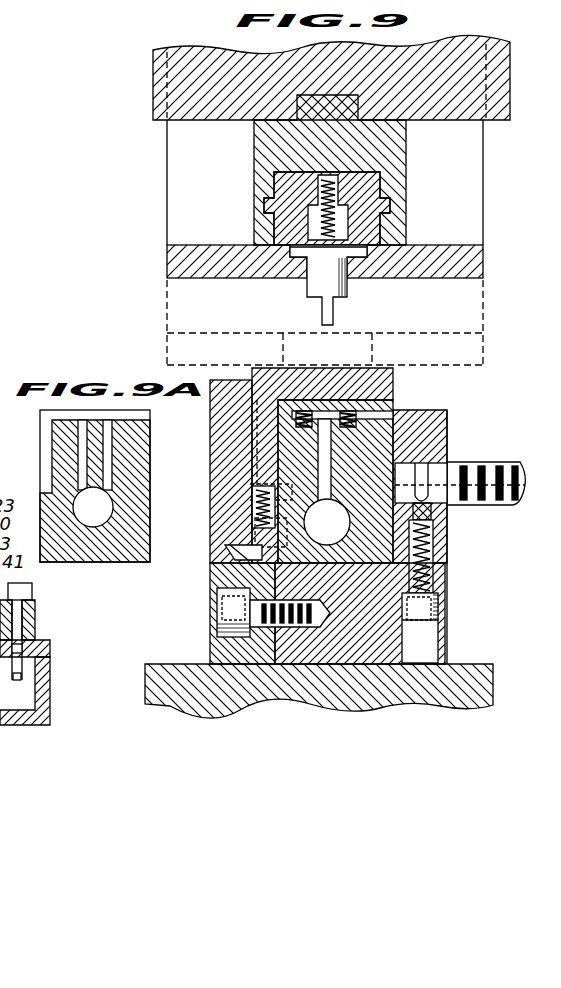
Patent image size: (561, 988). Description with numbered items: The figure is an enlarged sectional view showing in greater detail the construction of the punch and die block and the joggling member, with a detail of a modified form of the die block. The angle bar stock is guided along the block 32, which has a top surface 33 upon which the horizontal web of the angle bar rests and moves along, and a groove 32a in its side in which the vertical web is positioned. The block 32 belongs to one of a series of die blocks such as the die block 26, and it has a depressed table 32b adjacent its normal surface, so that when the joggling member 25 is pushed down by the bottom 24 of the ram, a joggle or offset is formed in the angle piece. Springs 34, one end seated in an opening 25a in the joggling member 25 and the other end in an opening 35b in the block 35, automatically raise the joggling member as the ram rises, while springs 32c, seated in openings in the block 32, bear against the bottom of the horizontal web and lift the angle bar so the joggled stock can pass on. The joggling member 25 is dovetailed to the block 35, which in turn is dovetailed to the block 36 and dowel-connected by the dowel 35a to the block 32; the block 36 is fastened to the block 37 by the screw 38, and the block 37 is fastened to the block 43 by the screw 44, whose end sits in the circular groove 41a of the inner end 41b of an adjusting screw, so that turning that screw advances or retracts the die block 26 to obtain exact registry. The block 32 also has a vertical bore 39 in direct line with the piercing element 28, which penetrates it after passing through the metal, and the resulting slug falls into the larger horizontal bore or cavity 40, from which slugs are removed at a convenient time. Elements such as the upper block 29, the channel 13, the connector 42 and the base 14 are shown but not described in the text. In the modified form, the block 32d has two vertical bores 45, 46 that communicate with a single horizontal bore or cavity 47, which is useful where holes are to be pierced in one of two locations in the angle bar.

In FIG. 9, the upper die block 29 is at (153, 82).
In FIG. 9, the bottom of the ram 24 is at (483, 262).
In FIG. 9, the piercing element 28 is at (313, 284).
In FIG. 9, the joggling member 25 is at (393, 380).
In FIG. 9, the opening 25a is at (227, 470).
In FIG. 9, the block 32 is at (373, 440).
In FIG. 9, the channel 13 is at (387, 401).
In FIG. 9, the depressed table 32b is at (325, 430).
In FIG. 9, the springs 32c is at (305, 412).
In FIG. 9, the vertical bore 39 is at (347, 410).
In FIG. 9, the top surface 33 is at (356, 417).
In FIG. 9, the horizontal bore or cavity 40 is at (327, 522).
In FIG. 9, the inner end of screw 41b is at (438, 473).
In FIG. 9, the block 43 is at (440, 466).
In FIG. 9, the circular groove 41a is at (425, 463).
In FIG. 9, the connector 42 is at (502, 463).
In FIG. 9, the block 35 is at (250, 478).
In FIG. 9, the springs 34 is at (253, 513).
In FIG. 9, the groove 32a is at (252, 496).
In FIG. 9, the opening 35b is at (240, 538).
In FIG. 9, the dowel 35a is at (230, 558).
In FIG. 9, the block 36 is at (218, 577).
In FIG. 9, the block 37 is at (377, 643).
In FIG. 9, the screw 38 is at (217, 615).
In FIG. 9, the screw 44 is at (440, 602).
In FIG. 9, the die block 26 is at (459, 599).
In FIG. 9, the base 14 is at (493, 682).
In FIG. 9A, the block 32d is at (100, 556).
In FIG. 9A, the vertical bore 45 is at (80, 433).
In FIG. 9A, the vertical bore 46 is at (107, 440).
In FIG. 9A, the horizontal bore or cavity 47 is at (93, 507).